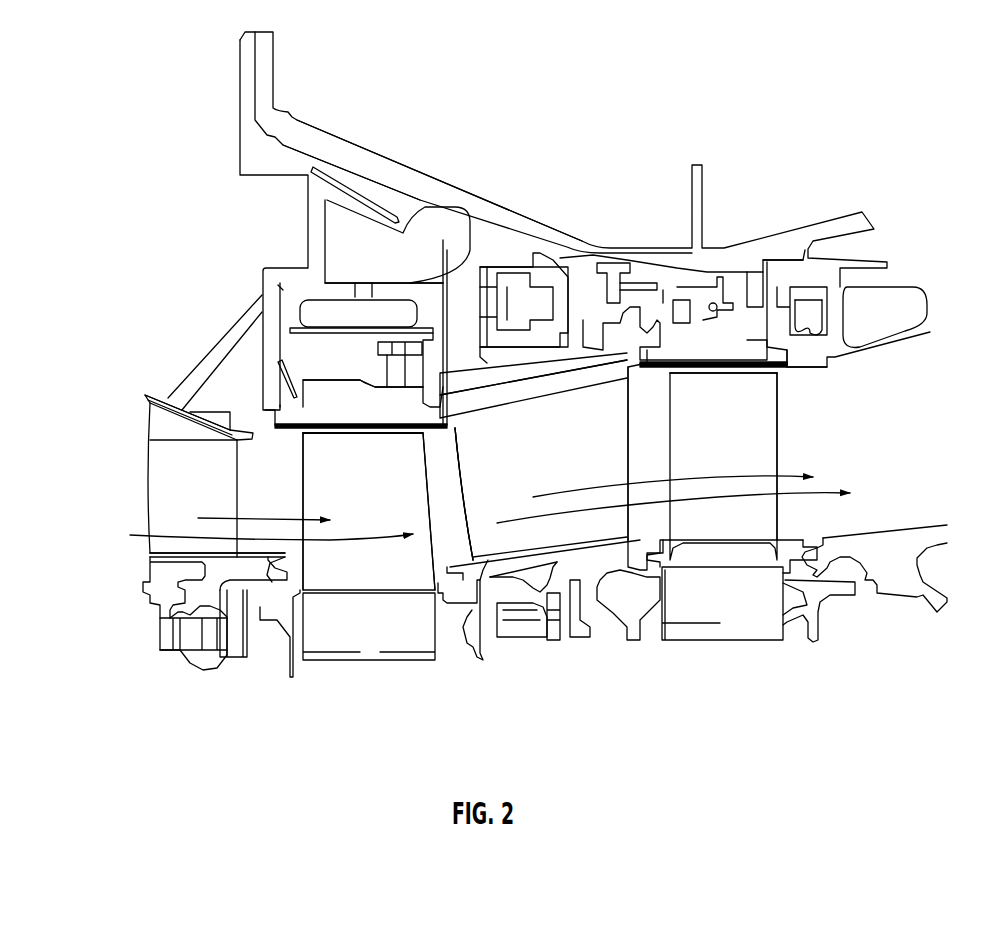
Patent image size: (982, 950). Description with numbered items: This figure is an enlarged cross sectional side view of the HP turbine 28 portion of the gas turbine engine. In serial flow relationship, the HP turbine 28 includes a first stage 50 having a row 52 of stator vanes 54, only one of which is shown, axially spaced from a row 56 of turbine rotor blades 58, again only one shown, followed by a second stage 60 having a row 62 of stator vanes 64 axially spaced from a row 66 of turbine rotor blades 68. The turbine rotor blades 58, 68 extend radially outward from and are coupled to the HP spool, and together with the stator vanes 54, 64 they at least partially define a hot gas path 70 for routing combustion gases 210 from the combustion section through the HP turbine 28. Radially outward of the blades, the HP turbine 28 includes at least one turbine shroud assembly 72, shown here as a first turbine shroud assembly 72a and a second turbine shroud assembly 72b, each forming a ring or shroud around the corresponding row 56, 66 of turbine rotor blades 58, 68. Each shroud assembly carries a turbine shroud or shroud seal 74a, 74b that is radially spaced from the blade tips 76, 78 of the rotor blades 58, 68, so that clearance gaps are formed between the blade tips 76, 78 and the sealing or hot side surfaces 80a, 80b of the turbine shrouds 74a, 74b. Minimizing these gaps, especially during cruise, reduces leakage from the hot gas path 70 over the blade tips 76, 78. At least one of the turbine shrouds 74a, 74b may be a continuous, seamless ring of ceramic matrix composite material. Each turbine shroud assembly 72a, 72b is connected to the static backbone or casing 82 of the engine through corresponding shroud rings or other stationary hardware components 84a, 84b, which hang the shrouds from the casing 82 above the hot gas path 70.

The HP turbine 28 is at (628, 98).
The first stage 50 is at (265, 702).
The row of stator vanes 52 is at (143, 466).
The stator vane 54 is at (206, 499).
The row of turbine rotor blades 56 is at (303, 497).
The turbine rotor blade 58 is at (373, 508).
The second stage 60 is at (572, 675).
The row of stator vanes 62 is at (458, 475).
The stator vane 64 is at (559, 476).
The row of turbine rotor blades 66 is at (787, 463).
The turbine rotor blade 68 is at (740, 473).
The hot gas path 70 is at (150, 535).
The turbine shroud assembly 72 is at (393, 262).
The first turbine shroud assembly 72a is at (391, 272).
The second turbine shroud assembly 72b is at (747, 290).
The turbine shroud 74a is at (345, 388).
The turbine shroud 74b is at (757, 353).
The blade tip 76 is at (352, 434).
The blade tip 78 is at (723, 383).
The hot side surface 80a is at (442, 417).
The hot side surface 80b is at (667, 360).
The casing 82 is at (411, 152).
The stationary hardware component 84a is at (433, 353).
The stationary hardware component 84b is at (793, 320).
The combustion gases 210 is at (213, 518).